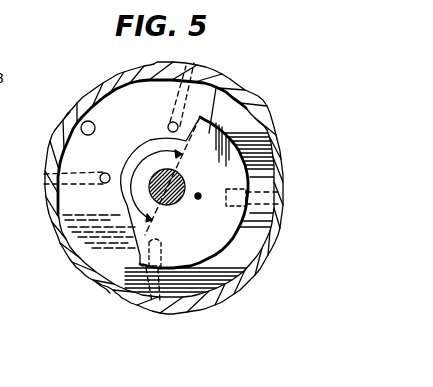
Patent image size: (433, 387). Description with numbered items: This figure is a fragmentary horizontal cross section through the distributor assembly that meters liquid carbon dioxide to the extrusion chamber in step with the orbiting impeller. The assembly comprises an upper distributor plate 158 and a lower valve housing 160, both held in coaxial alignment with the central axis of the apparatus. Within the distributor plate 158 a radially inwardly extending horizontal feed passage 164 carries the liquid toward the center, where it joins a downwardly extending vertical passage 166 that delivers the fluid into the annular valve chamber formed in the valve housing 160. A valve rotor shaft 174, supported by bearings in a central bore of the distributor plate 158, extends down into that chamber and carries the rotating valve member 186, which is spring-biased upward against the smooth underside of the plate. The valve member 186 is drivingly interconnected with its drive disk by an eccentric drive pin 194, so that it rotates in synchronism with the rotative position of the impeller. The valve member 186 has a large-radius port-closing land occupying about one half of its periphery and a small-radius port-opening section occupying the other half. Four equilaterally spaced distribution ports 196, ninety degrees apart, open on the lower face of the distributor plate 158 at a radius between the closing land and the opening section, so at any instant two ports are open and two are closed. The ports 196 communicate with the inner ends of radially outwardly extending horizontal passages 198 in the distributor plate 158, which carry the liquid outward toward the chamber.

The upper distributor plate 158 is at (237, 123).
The lower valve housing 160 is at (95, 282).
The horizontal feed passage 164 is at (65, 118).
The vertical passage 166 is at (95, 128).
The shaft 174 is at (140, 222).
The rotating valve member 186 is at (221, 84).
The eccentric drive pin 194 is at (205, 189).
The distribution ports 196 is at (173, 121).
The horizontal passages 198 is at (196, 60).